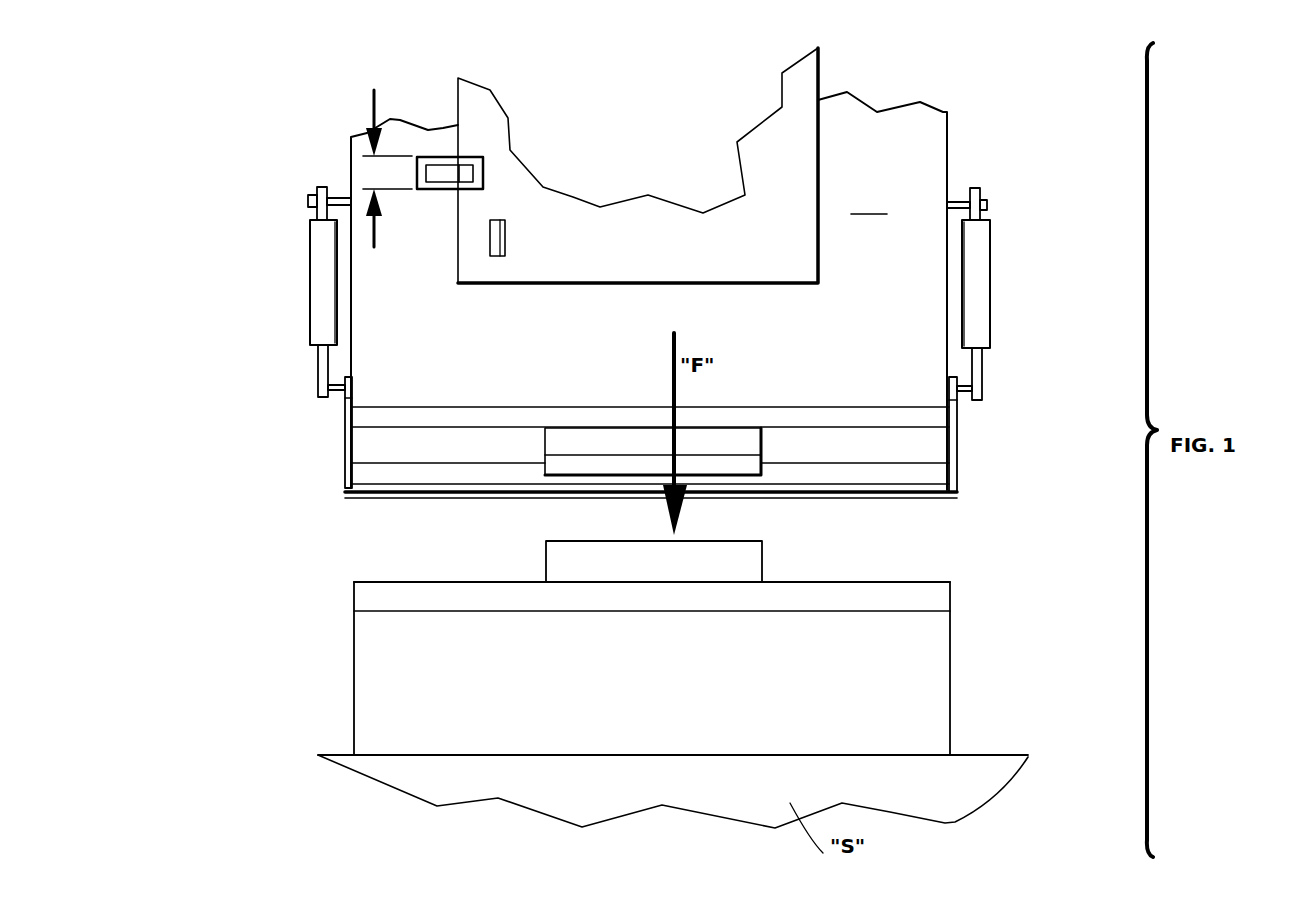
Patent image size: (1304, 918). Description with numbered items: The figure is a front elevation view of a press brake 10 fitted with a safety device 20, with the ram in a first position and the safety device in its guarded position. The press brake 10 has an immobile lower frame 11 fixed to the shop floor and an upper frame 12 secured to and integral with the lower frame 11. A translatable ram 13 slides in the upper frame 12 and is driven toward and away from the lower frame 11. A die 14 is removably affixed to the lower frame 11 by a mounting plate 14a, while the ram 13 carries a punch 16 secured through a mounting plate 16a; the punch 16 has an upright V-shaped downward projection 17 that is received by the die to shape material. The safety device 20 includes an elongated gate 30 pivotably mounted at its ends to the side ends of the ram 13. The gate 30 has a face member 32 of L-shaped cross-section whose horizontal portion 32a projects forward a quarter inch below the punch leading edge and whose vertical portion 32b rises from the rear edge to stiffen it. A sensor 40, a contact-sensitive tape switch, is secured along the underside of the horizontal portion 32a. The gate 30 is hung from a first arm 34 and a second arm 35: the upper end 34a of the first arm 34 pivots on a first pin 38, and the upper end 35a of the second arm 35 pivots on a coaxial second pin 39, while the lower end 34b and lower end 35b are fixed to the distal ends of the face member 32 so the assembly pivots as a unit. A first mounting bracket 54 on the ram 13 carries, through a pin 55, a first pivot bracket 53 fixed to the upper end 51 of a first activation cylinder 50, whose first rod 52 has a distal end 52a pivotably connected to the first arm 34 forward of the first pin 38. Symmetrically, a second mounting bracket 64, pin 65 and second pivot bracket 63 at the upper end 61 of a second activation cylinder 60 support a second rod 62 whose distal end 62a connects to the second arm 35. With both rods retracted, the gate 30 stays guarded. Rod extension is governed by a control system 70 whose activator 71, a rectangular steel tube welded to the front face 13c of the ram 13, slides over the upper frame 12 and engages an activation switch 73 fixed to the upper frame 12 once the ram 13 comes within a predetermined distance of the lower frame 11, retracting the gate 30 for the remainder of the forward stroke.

The press brake 10 is at (170, 570).
The lower frame 11 is at (925, 680).
The upper frame 12 is at (782, 115).
The ram 13 is at (880, 137).
The front face of the ram 13c is at (871, 203).
The die 14 is at (752, 562).
The mounting plate 14a is at (908, 582).
The punch 16 is at (559, 442).
The mounting plate 16a is at (938, 418).
The downward projection 17 is at (592, 468).
The safety device 20 is at (624, 443).
The gate 30 is at (633, 525).
The face member 32 is at (415, 494).
The horizontal portion 32a is at (862, 485).
The vertical portion 32b is at (433, 475).
The first arm 34 is at (345, 415).
The upper end of the first arm 34a is at (352, 380).
The lower end of the first arm 34b is at (347, 497).
The second arm 35 is at (955, 408).
The upper end of the second arm 35a is at (951, 385).
The lower end of the second arm 35b is at (957, 492).
The first pin 38 is at (345, 380).
The second pin 39 is at (950, 377).
The sensor 40 is at (940, 498).
The first activation cylinder 50 is at (275, 261).
The upper end of the first activation cylinder 51 is at (310, 226).
The first rod 52 is at (318, 358).
The distal end of the first rod 52a is at (318, 400).
The first pivot bracket 53 is at (316, 190).
The first mounting bracket 54 is at (341, 197).
The pin 55 is at (308, 201).
The second activation cylinder 60 is at (1005, 258).
The upper end of the second activation cylinder 61 is at (990, 215).
The second rod 62 is at (985, 352).
The distal end of the second rod 62a is at (982, 400).
The second pivot bracket 63 is at (975, 187).
The second mounting bracket 64 is at (955, 200).
The pin 65 is at (985, 200).
The control system 70 is at (468, 146).
The activator 71 is at (418, 172).
The activation switch 73 is at (505, 242).